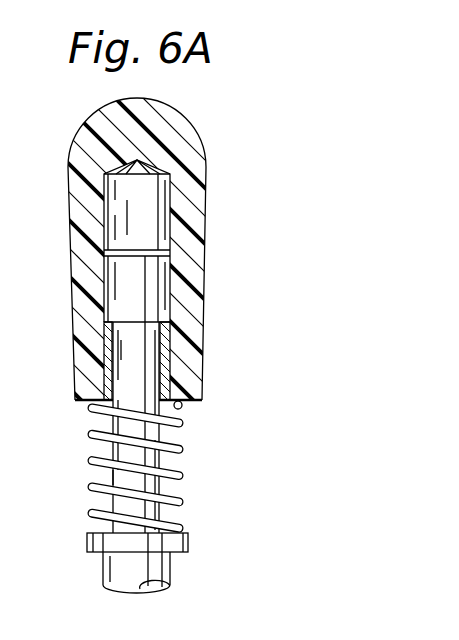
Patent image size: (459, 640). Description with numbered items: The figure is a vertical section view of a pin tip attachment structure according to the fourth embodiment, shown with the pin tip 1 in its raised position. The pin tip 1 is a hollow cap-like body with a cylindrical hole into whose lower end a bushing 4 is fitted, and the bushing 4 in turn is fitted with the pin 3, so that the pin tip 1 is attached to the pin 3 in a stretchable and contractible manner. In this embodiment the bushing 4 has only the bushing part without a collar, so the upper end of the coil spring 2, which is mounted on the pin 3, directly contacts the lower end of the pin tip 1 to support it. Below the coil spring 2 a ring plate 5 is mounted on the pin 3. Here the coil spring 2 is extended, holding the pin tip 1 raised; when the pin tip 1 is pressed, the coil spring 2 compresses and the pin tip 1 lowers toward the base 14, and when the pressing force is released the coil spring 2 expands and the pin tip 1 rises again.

The pin tip 1 is at (175, 141).
The coil spring 2 is at (178, 450).
The pin 3 is at (152, 568).
The bushing 4 is at (168, 341).
The ring plate 5 is at (168, 540).
The base 14 is at (110, 480).